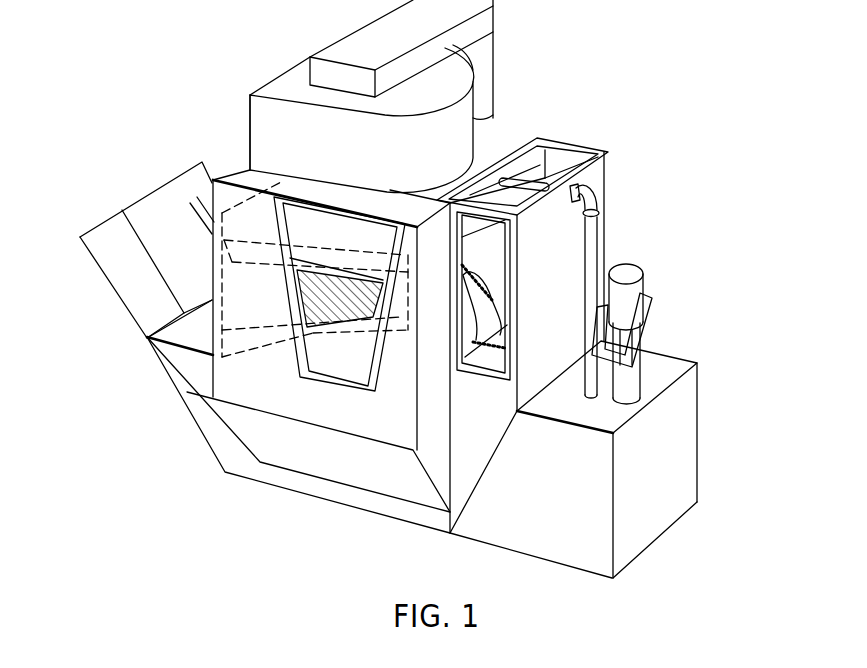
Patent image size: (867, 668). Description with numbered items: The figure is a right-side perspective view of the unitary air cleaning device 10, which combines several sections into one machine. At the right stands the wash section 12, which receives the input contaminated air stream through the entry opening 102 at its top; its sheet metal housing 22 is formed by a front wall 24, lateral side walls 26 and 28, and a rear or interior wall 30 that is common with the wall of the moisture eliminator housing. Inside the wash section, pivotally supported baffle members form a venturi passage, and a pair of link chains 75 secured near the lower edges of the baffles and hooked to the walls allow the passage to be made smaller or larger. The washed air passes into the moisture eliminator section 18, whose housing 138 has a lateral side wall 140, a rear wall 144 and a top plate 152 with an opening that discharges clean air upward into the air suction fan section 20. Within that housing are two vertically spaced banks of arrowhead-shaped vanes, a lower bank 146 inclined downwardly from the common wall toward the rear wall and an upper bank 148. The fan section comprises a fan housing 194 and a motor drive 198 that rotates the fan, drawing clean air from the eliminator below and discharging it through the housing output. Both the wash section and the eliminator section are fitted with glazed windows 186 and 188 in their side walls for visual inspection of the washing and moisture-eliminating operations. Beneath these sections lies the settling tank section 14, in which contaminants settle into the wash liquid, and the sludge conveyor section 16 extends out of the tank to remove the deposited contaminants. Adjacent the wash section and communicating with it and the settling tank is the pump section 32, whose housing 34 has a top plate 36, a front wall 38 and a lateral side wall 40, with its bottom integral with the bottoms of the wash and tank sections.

The air cleaning device 10 is at (540, 115).
The wash section 12 is at (604, 179).
The settling tank section 14 is at (330, 488).
The sludge conveyor section 16 is at (104, 287).
The moisture eliminator section 18 is at (240, 378).
The air suction fan section 20 is at (478, 104).
The sheet metal housing 22 is at (534, 362).
The front wall 24 is at (568, 238).
The lateral side wall 26 is at (478, 448).
The lateral side wall 28 is at (598, 160).
The rear or interior wall 30 is at (403, 265).
The pump section 32 is at (660, 315).
The pump section housing 34 is at (692, 358).
The top plate 36 is at (655, 383).
The front wall 38 is at (672, 462).
The lateral side wall 40 is at (598, 545).
The link chains 75 is at (476, 272).
The entry opening 102 is at (575, 157).
The moisture eliminator housing 138 is at (207, 260).
The lateral side wall 140 is at (398, 402).
The rear wall 144 is at (273, 390).
The lower bank of moisture eliminator vanes 146 is at (217, 322).
The upper bank of moisture eliminator vanes 148 is at (315, 269).
The top plate 152 is at (233, 178).
The glazed window 186 is at (505, 320).
The glazed window 188 is at (357, 357).
The fan housing 194 is at (292, 87).
The motor drive 198 is at (487, 62).